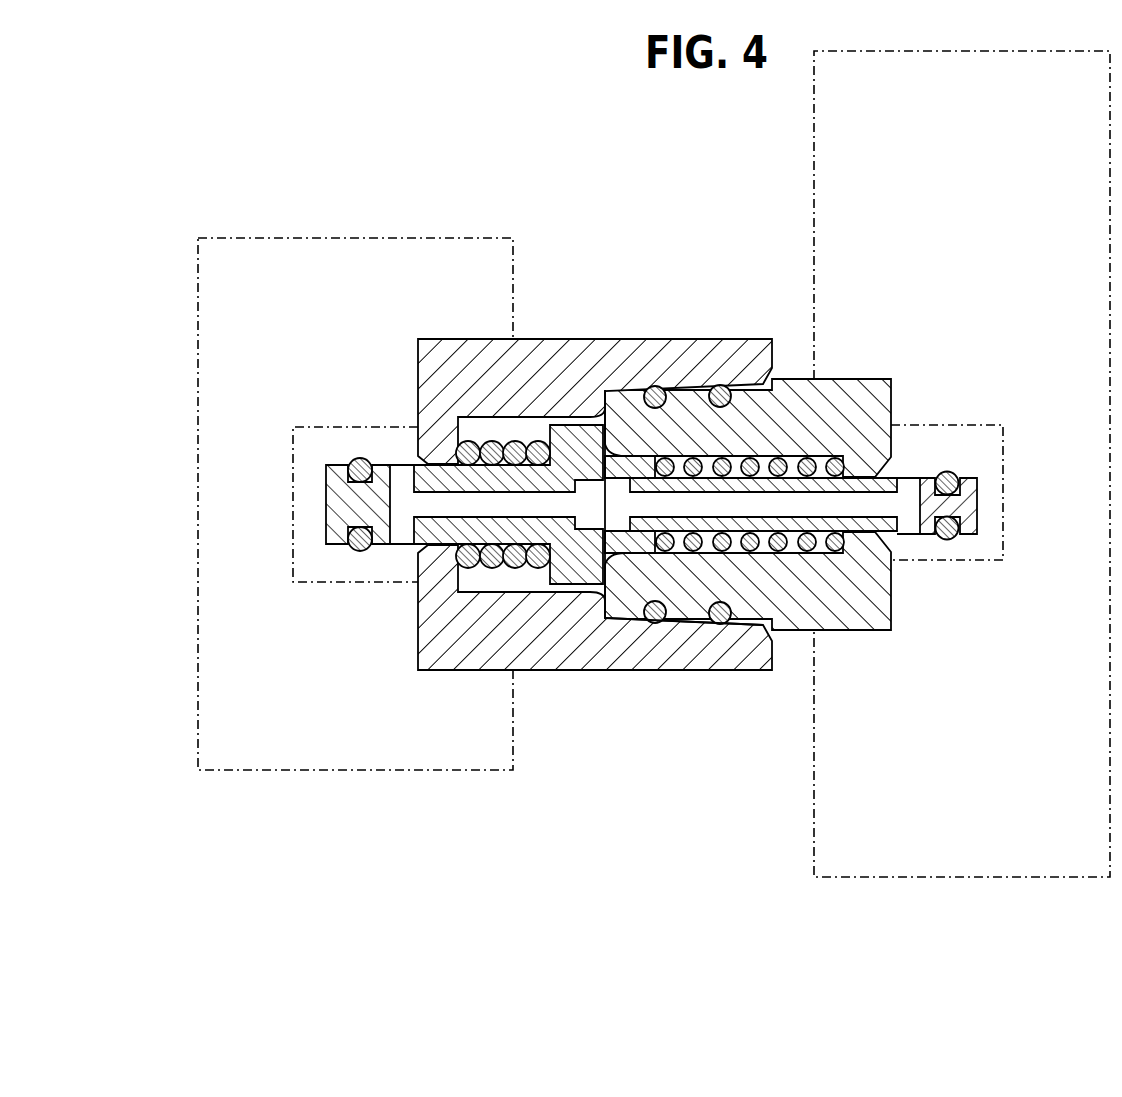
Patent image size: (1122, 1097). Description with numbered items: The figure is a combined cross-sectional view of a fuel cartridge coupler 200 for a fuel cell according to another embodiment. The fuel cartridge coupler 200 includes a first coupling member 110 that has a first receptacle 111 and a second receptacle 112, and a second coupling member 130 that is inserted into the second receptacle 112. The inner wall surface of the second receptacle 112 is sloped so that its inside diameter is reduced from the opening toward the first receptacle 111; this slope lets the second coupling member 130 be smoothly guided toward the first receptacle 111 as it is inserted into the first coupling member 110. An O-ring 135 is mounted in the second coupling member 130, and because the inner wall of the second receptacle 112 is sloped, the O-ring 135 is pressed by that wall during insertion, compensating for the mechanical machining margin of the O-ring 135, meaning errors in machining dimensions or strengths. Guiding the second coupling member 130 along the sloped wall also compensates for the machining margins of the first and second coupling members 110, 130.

The fuel cartridge coupler 200 is at (683, 178).
The first coupling member 110 is at (438, 333).
The first receptacle 111 is at (484, 588).
The second receptacle 112 is at (689, 617).
The second coupling member 130 is at (882, 636).
The O-ring 135 is at (722, 387).